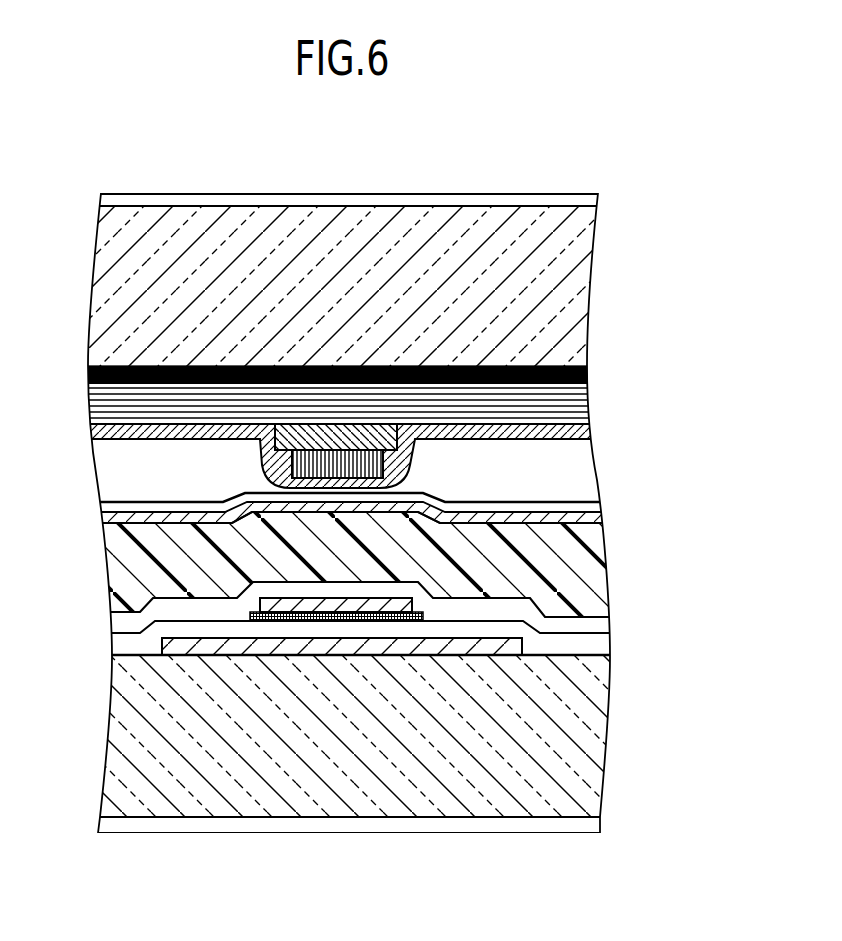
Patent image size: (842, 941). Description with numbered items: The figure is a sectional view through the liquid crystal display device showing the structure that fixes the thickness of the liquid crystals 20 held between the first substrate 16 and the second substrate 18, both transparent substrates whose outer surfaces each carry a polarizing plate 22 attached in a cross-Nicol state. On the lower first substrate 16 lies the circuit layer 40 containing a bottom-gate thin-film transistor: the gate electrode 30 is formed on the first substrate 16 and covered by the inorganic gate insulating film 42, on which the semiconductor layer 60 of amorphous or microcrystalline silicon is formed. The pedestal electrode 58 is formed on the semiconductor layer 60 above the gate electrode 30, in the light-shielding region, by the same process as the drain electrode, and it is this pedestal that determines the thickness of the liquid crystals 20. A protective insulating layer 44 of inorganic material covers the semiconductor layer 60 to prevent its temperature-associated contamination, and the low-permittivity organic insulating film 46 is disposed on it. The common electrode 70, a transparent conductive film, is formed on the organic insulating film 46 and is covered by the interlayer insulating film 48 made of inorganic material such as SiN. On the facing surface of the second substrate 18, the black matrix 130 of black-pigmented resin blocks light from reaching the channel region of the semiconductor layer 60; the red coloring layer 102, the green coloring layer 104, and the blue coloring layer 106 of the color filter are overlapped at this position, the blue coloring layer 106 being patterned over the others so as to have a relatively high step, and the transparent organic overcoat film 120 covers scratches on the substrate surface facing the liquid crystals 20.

The first substrate 16 is at (172, 785).
The second substrate 18 is at (537, 237).
The liquid crystals 20 is at (573, 473).
The polarizing plate 22 is at (482, 205).
The gate electrode 30 is at (247, 650).
The circuit layer 40 is at (392, 747).
The gate insulating film 42 is at (430, 628).
The protective insulating layer 44 is at (500, 607).
The organic insulating film 46 is at (587, 568).
The interlayer insulating film 48 is at (590, 505).
The pedestal electrode 58 is at (313, 621).
The semiconductor layer 60 is at (367, 612).
The common electrode 70 is at (596, 518).
The red coloring layer 102 is at (345, 452).
The green coloring layer 104 is at (304, 440).
The blue coloring layer 106 is at (590, 405).
The overcoat film 120 is at (592, 433).
The black matrix 130 is at (588, 377).